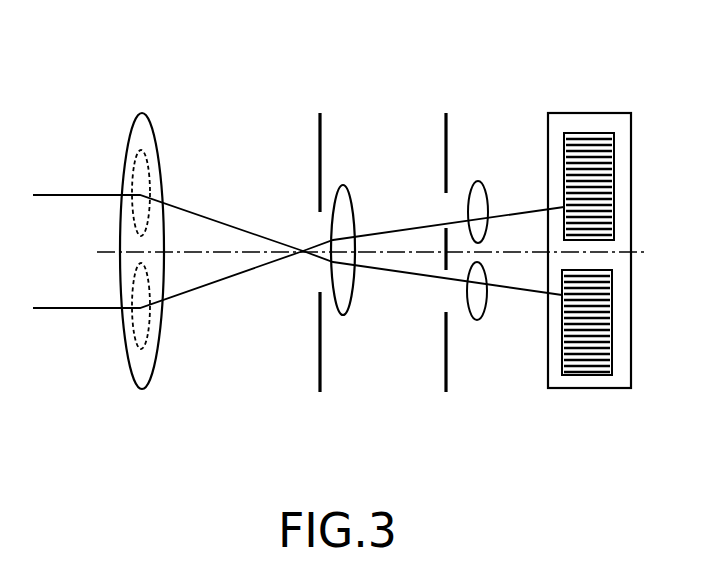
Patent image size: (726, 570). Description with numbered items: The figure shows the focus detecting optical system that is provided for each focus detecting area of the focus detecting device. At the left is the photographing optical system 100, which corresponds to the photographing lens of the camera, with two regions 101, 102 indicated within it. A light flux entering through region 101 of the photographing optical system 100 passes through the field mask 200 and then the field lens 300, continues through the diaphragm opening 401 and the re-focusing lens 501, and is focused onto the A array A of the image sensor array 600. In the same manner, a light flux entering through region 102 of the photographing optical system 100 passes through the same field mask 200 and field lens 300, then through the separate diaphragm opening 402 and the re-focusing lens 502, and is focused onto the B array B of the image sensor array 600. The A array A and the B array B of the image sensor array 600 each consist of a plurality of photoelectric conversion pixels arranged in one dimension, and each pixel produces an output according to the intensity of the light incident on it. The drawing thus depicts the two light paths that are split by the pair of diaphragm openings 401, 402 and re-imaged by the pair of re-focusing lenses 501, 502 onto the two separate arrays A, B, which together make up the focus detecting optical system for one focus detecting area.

The photographing optical system 100 is at (148, 118).
The region of the photographing optical system 101 is at (145, 187).
The region of the photographing optical system 102 is at (142, 327).
The field mask 200 is at (328, 120).
The field lens 300 is at (350, 185).
The diaphragm opening 401 is at (445, 293).
The diaphragm opening 402 is at (443, 208).
The re-focusing lens 501 is at (483, 320).
The re-focusing lens 502 is at (482, 182).
The image sensor array 600 is at (592, 113).
The A array A is at (612, 332).
The B array B is at (614, 190).